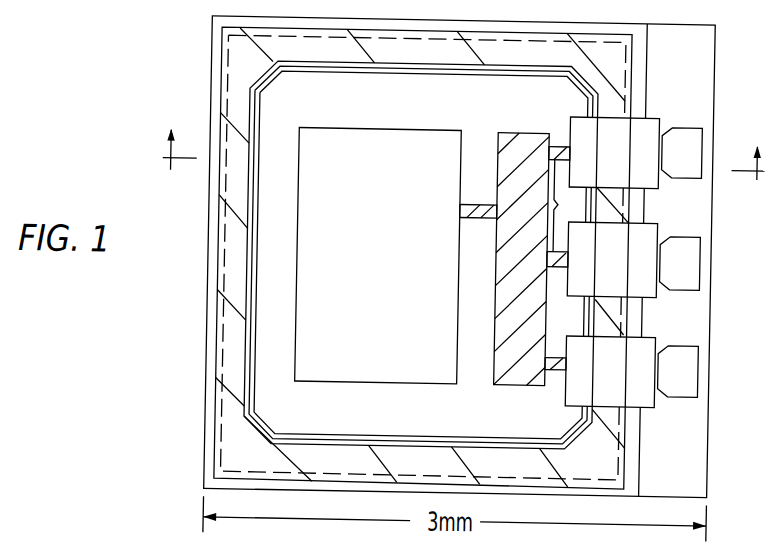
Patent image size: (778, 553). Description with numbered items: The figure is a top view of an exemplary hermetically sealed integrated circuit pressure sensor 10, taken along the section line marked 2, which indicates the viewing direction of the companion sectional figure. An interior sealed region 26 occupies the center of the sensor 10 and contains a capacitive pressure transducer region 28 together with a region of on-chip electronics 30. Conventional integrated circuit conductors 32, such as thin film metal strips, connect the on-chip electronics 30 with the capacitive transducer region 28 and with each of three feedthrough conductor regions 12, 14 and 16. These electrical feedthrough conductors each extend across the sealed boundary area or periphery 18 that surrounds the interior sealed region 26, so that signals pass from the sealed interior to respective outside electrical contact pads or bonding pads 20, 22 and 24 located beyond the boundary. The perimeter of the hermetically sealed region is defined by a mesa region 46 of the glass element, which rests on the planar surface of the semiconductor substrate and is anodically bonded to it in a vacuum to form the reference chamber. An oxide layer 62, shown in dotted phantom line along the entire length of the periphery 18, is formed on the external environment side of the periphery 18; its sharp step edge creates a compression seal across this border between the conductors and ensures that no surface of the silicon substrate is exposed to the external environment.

The section line for FIG. 2 is at (464, 154).
The hermetically sealed integrated circuit pressure sensor 10 is at (172, 81).
The feedthrough conductor region 12 is at (648, 124).
The feedthrough conductor region 14 is at (646, 234).
The feedthrough conductor region 16 is at (648, 344).
The sealed boundary area or periphery 18 is at (612, 65).
The outside electrical contact pad or bonding pad 20 is at (690, 144).
The outside electrical contact pad or bonding pad 22 is at (690, 259).
The outside electrical contact pad or bonding pad 24 is at (684, 363).
The interior sealed region 26 is at (421, 114).
The capacitive pressure transducer region 28 is at (390, 210).
The region of on-chip electronics 30 is at (525, 131).
The integrated circuit conductors 32 is at (462, 212).
The mesa region 46 is at (234, 357).
The oxide layer 62 is at (224, 394).